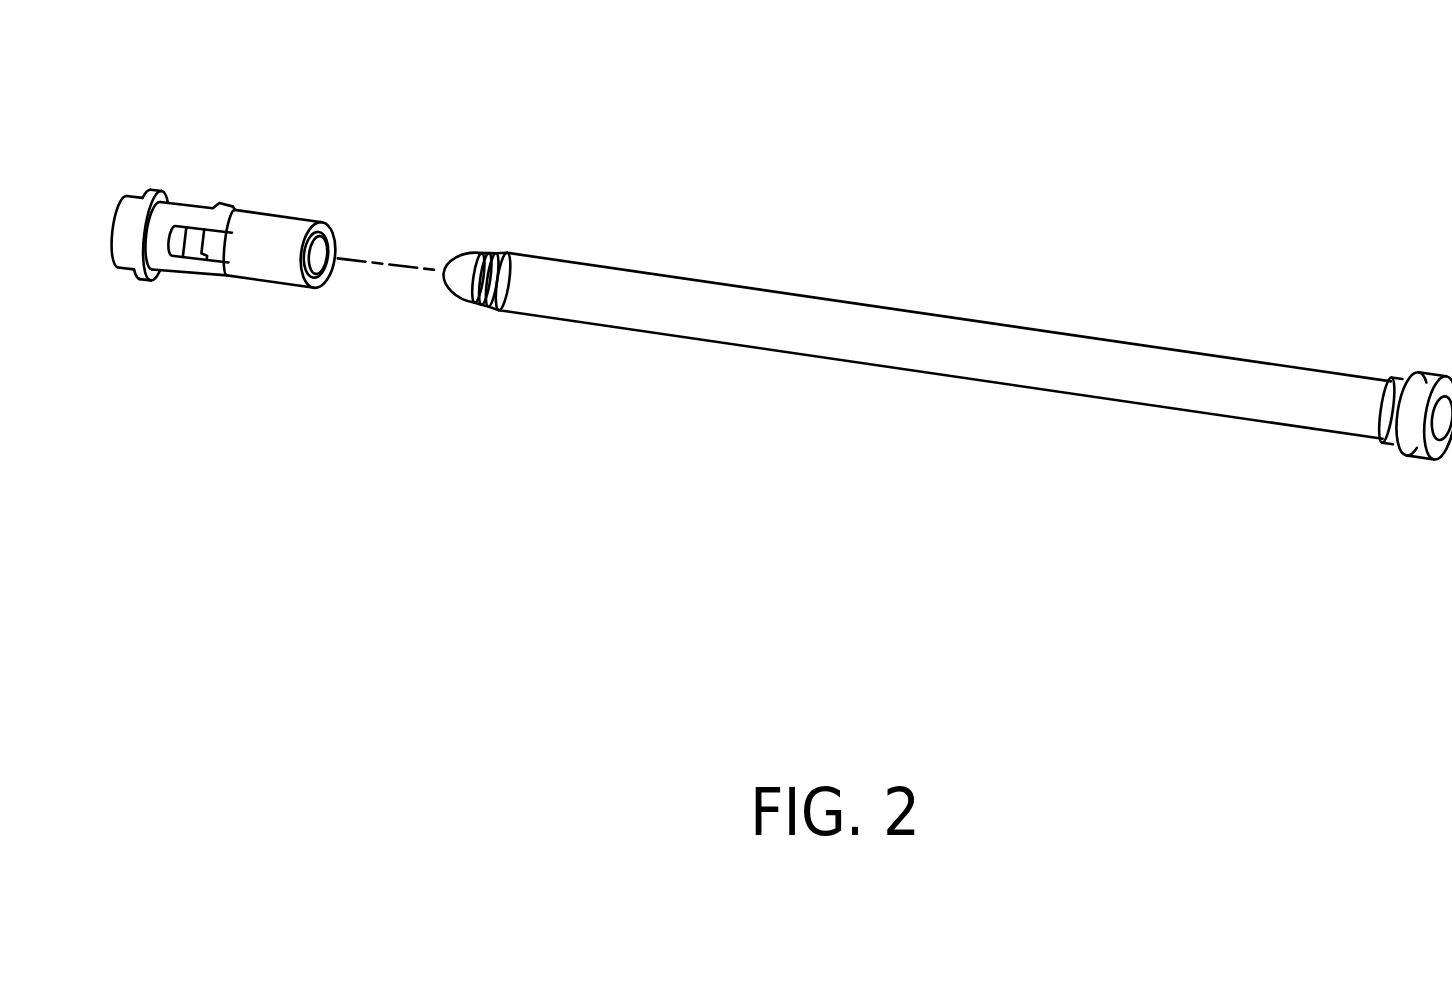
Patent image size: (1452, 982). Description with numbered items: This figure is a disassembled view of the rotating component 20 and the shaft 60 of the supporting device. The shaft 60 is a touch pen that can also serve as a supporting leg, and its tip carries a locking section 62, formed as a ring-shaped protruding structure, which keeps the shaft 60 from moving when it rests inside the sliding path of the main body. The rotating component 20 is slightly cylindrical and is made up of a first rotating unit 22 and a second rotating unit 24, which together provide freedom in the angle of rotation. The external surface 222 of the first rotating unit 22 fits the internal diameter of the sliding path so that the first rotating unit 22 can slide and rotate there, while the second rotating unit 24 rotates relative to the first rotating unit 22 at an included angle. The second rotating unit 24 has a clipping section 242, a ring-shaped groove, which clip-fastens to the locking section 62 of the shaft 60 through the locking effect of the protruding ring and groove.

The rotating component 20 is at (238, 174).
The first rotating unit 22 is at (175, 273).
The external surface 222 is at (160, 190).
The second rotating unit 24 is at (277, 267).
The clipping section 242 is at (337, 247).
The shaft 60 is at (942, 340).
The locking section 62 is at (508, 255).